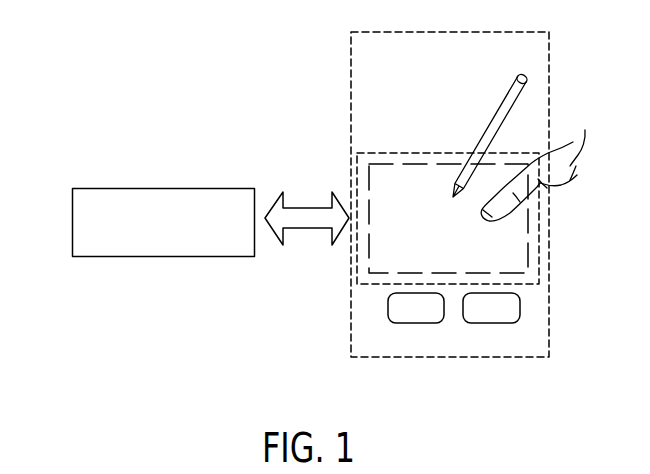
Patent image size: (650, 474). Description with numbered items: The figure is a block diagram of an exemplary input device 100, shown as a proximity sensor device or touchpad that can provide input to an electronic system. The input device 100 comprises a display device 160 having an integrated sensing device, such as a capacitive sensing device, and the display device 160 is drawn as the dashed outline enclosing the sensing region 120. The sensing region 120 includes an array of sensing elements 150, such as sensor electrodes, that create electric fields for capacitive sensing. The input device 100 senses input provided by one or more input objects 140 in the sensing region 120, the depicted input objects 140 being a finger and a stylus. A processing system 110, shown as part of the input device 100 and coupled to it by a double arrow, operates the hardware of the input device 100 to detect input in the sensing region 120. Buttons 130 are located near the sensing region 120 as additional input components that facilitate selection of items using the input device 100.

The input device 100 is at (297, 59).
The processing system 110 is at (72, 217).
The sensing region 120 is at (546, 229).
The buttons 130 is at (417, 323).
The input objects 140 is at (512, 108).
The sensing elements 150 is at (405, 163).
The display device 160 is at (549, 58).